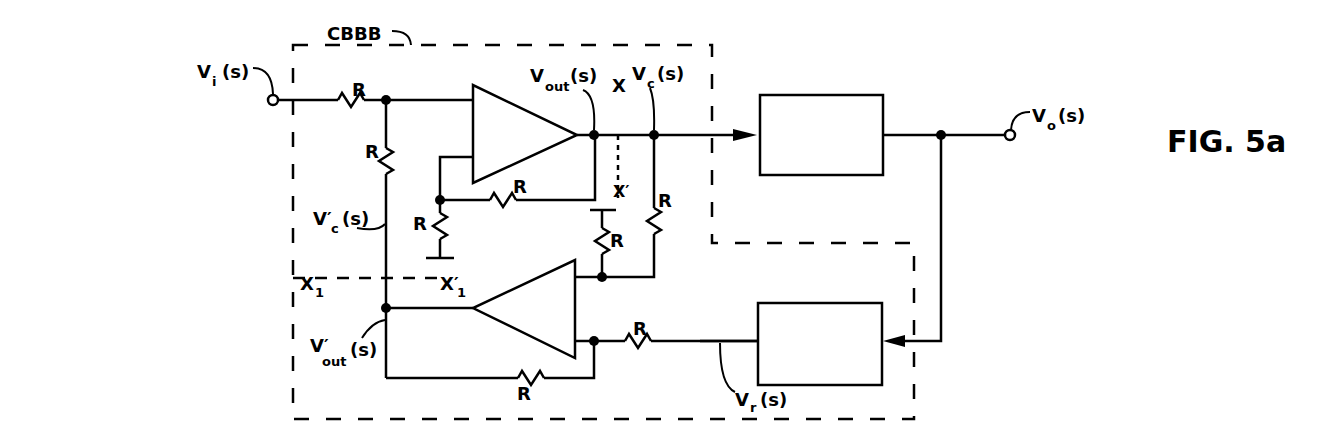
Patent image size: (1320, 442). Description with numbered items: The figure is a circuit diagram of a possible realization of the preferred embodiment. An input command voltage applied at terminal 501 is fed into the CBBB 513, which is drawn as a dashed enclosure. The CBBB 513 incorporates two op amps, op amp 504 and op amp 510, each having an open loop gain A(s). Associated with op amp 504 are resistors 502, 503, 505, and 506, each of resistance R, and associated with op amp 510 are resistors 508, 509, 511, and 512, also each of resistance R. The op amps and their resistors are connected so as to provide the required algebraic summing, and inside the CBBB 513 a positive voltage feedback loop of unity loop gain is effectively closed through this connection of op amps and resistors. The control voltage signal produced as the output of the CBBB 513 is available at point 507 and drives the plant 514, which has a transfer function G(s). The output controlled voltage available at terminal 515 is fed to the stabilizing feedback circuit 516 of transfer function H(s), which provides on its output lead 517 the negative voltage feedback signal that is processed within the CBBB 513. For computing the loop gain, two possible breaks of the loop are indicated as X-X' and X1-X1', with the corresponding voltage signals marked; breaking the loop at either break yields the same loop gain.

The terminal 501 is at (273, 106).
The resistor 502 is at (357, 107).
The resistor 503 is at (390, 156).
The op amp 504 is at (495, 96).
The resistor 505 is at (511, 206).
The resistor 506 is at (447, 230).
The point 507 is at (655, 132).
The resistor 508 is at (658, 222).
The resistor 509 is at (597, 252).
The op amp 510 is at (510, 328).
The resistor 511 is at (634, 352).
The resistor 512 is at (544, 386).
The CBBB 513 is at (613, 40).
The plant 514 is at (803, 95).
The terminal 515 is at (1012, 142).
The stabilizing feedback circuit 516 is at (788, 303).
The lead 517 is at (743, 338).